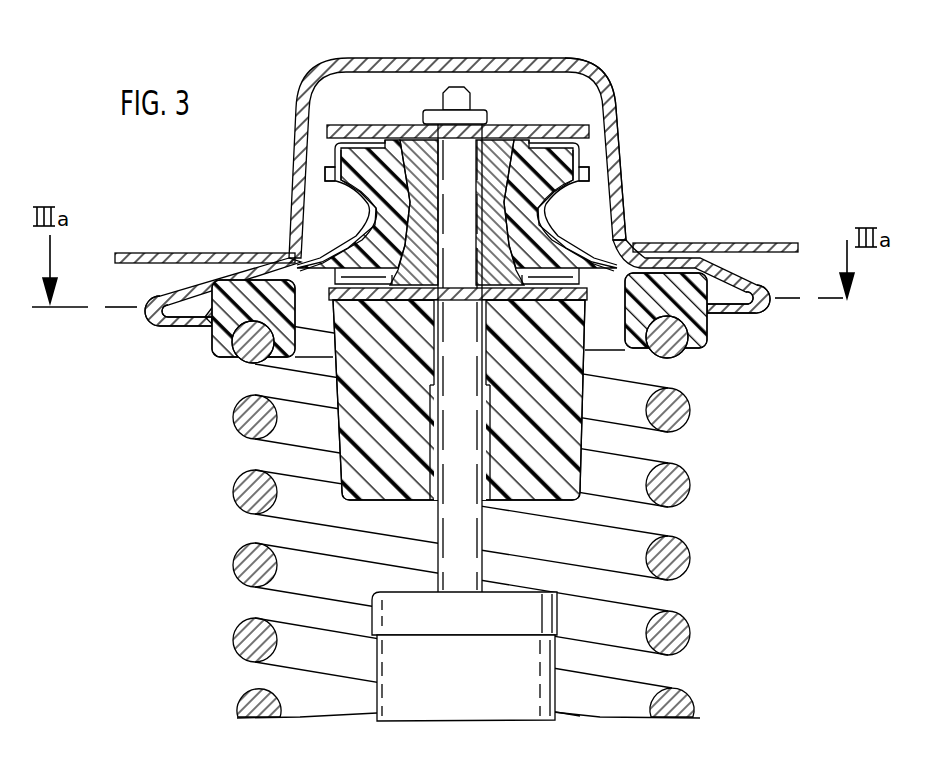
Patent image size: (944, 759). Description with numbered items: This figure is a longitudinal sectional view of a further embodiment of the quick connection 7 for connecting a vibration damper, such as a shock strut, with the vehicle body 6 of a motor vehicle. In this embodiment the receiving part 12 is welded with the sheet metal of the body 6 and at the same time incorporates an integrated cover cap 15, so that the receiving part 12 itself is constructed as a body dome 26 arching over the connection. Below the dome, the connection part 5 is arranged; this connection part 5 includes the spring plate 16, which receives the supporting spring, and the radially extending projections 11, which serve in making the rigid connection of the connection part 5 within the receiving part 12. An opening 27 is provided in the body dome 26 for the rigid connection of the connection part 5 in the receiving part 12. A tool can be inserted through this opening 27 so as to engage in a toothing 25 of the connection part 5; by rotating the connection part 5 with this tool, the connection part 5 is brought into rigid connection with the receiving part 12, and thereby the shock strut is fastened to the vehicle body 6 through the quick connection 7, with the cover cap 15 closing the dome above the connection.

The connection part 5 is at (568, 236).
The vehicle body 6 is at (752, 247).
The quick connection 7 is at (158, 275).
The radially extending projections 11 is at (735, 305).
The receiving part 12 is at (733, 282).
The cover cap 15 is at (543, 58).
The spring plate 16 is at (225, 262).
The toothing 25 is at (589, 168).
The body dome 26 is at (603, 82).
The opening 27 is at (620, 174).